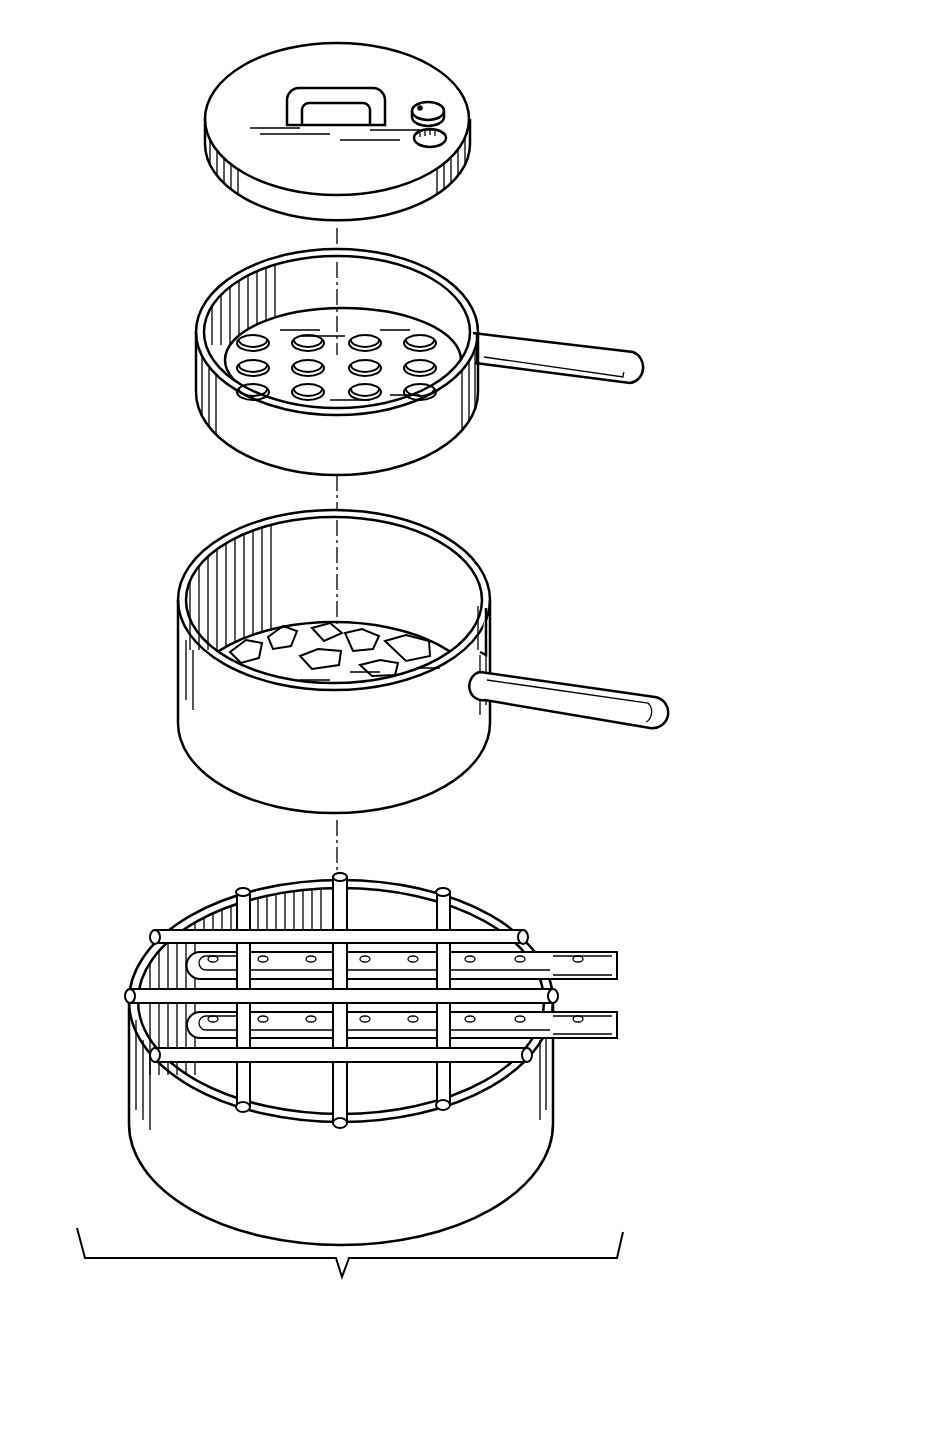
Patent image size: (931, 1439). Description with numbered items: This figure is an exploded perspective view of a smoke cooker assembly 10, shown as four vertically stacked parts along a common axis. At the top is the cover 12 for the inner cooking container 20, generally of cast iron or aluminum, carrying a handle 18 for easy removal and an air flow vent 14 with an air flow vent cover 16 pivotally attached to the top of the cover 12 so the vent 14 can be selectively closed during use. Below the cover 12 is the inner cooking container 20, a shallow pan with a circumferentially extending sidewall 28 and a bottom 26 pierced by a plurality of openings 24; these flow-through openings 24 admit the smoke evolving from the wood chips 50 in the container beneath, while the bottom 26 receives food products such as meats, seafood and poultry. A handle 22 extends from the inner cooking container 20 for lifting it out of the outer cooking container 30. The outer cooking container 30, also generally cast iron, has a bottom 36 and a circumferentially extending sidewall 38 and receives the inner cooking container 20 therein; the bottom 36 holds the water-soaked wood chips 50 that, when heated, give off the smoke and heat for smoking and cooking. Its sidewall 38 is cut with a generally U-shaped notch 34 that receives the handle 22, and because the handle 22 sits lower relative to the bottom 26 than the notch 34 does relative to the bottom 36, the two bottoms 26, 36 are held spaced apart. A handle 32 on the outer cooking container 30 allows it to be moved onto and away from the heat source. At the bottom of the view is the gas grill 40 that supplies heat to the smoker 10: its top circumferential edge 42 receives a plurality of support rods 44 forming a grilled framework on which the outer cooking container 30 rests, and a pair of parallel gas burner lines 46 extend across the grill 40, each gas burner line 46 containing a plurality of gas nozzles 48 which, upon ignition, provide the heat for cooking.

The smoke cooker assembly 10 is at (543, 266).
The cover 12 is at (480, 120).
The air flow vent 14 is at (448, 139).
The air flow vent cover 16 is at (445, 108).
The handle 18 is at (374, 90).
The inner cooking container 20 is at (387, 352).
The handle 22 is at (590, 352).
The openings 24 is at (290, 388).
The bottom 26 is at (232, 357).
The sidewall 28 is at (233, 302).
The outer cooking container 30 is at (389, 652).
The handle 32 is at (610, 688).
The notch 34 is at (497, 638).
The bottom 36 is at (267, 633).
The sidewall 38 is at (233, 563).
The gas grill 40 is at (377, 1033).
The top circumferential edge 42 is at (183, 917).
The support rods 44 is at (240, 913).
The gas burner lines 46 is at (443, 937).
The gas nozzles 48 is at (413, 957).
The wood chips 50 is at (265, 655).